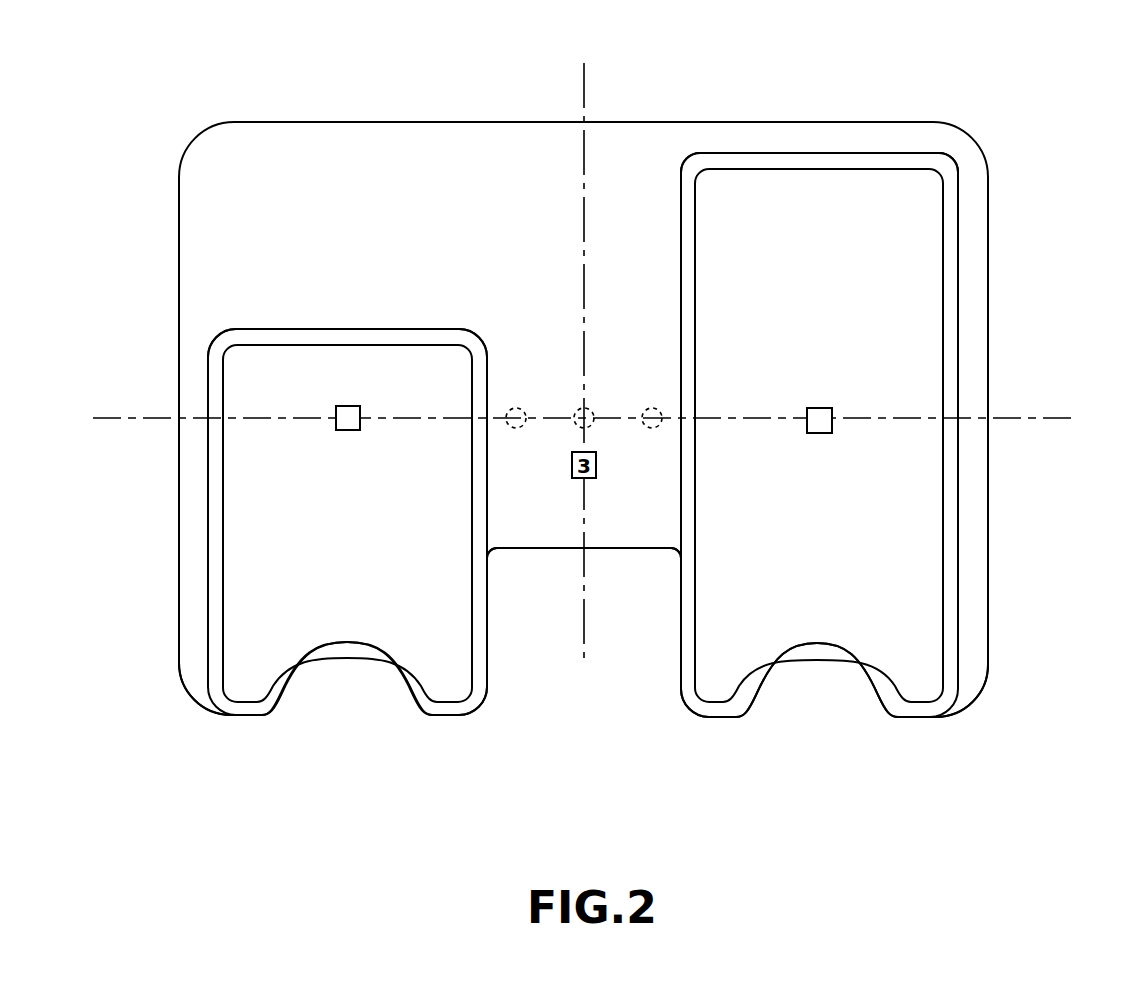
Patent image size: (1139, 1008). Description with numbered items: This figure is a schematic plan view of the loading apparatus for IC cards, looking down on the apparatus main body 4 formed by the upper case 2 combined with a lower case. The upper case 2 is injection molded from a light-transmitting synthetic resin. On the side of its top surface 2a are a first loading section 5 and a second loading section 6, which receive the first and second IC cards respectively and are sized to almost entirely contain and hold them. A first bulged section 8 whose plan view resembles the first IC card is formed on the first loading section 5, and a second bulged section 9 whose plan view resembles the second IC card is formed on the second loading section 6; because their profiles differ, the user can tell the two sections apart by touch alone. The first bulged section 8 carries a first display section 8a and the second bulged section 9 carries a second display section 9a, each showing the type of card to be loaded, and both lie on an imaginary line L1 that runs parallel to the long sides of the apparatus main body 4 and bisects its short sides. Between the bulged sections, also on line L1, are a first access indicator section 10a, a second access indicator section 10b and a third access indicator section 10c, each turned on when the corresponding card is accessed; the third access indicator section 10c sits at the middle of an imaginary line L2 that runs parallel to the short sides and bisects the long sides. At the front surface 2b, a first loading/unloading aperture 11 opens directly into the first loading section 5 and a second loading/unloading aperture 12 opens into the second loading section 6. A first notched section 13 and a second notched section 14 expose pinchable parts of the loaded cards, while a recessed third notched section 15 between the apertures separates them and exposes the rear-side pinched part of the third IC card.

The upper case 2 is at (633, 128).
The top surface 2a is at (361, 127).
The front surface 2b is at (440, 720).
The apparatus main body 4 is at (977, 137).
The first loading section 5 is at (923, 493).
The second loading section 6 is at (243, 493).
The first bulged section 8 is at (887, 410).
The first display section 8a is at (815, 408).
The second bulged section 9 is at (280, 408).
The second display section 9a is at (348, 406).
The first access indicator section 10a is at (652, 408).
The second access indicator section 10b is at (516, 408).
The third access indicator section 10c is at (582, 408).
The first loading/unloading aperture 11 is at (916, 720).
The second loading/unloading aperture 12 is at (247, 720).
The first notched section 13 is at (845, 665).
The second notched section 14 is at (333, 662).
The third notched section 15 is at (621, 550).
The imaginary line L1 is at (600, 420).
The imaginary line L2 is at (587, 351).